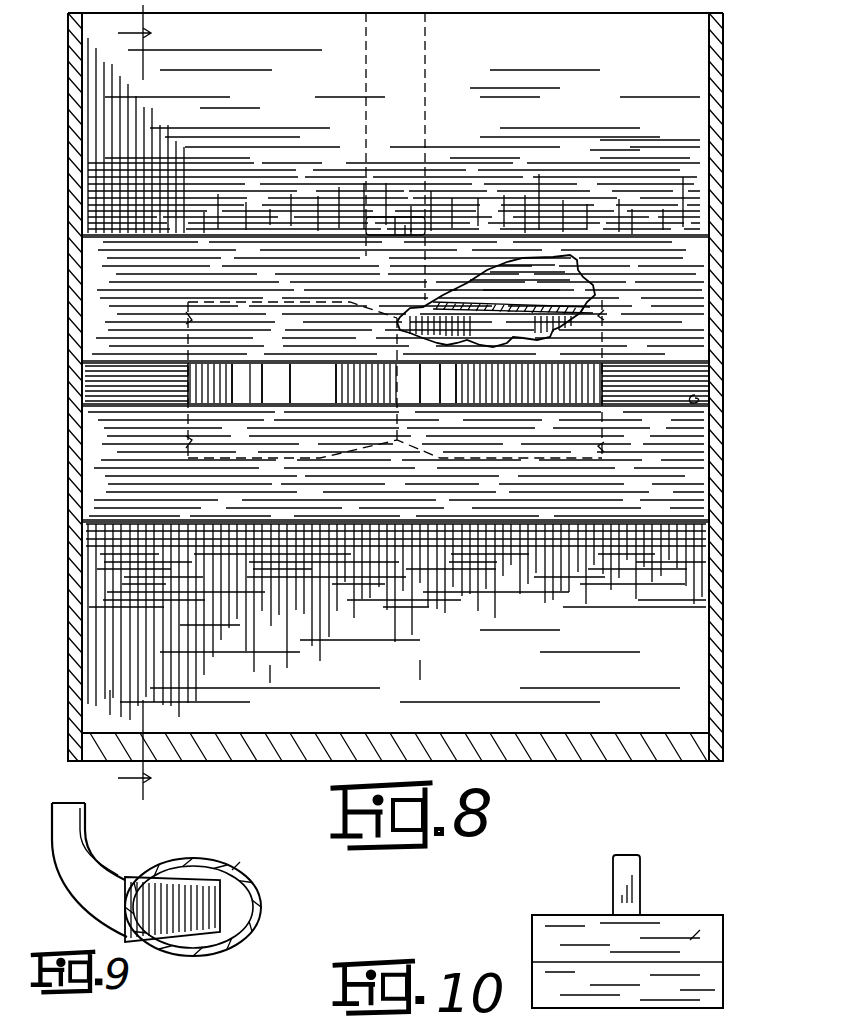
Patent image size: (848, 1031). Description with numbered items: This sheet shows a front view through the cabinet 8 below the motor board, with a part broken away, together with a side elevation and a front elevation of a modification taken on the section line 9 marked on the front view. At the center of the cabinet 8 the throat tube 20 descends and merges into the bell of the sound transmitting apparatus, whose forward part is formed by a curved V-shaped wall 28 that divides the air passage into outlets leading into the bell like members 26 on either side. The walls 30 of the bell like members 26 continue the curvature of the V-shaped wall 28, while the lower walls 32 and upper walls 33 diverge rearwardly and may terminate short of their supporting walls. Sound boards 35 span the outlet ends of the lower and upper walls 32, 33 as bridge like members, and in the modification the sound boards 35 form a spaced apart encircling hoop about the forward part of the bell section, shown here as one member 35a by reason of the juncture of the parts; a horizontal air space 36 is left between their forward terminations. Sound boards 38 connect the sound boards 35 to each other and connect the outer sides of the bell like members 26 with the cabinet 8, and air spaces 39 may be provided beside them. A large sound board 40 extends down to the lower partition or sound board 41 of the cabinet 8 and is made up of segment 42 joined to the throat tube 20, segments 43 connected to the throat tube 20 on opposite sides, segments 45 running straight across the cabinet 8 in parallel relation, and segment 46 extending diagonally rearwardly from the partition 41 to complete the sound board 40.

In FIG. 8, the cabinet 8 is at (74, 622).
In FIG. 8, the section line 9— 9 is at (124, 402).
In FIG. 8, the throat tube 20 is at (395, 120).
In FIG. 9, the throat tube 20 is at (65, 850).
In FIG. 10, the throat tube 20 is at (615, 885).
In FIG. 8, the bell like members 26 is at (555, 296).
In FIG. 9, the bell like members 26 is at (158, 888).
In FIG. 8, the curved V-shaped wall 28 is at (345, 386).
In FIG. 8, the walls 30 is at (590, 380).
In FIG. 8, the lower walls 32 is at (312, 462).
In FIG. 8, the upper walls 33 is at (300, 304).
In FIG. 8, the sound boards 35 is at (683, 283).
In FIG. 9, the sound boards 35 is at (193, 920).
In FIG. 10, the sound boards 35 is at (606, 958).
In FIG. 9, the concrete layer surface 35a is at (237, 853).
In FIG. 10, the concrete layer surface 35a is at (685, 942).
In FIG. 8, the horizontal air space 36 is at (695, 402).
In FIG. 8, the sound boards 38 is at (125, 385).
In FIG. 8, the air spaces 39 is at (186, 318).
In FIG. 8, the large sound board 40 is at (563, 120).
In FIG. 8, the partition or sound board 41 is at (656, 762).
In FIG. 8, the segment 42 is at (635, 133).
In FIG. 8, the segments or sound boards 43 is at (650, 225).
In FIG. 8, the segments 45 is at (648, 538).
In FIG. 8, the segment 46 is at (287, 724).